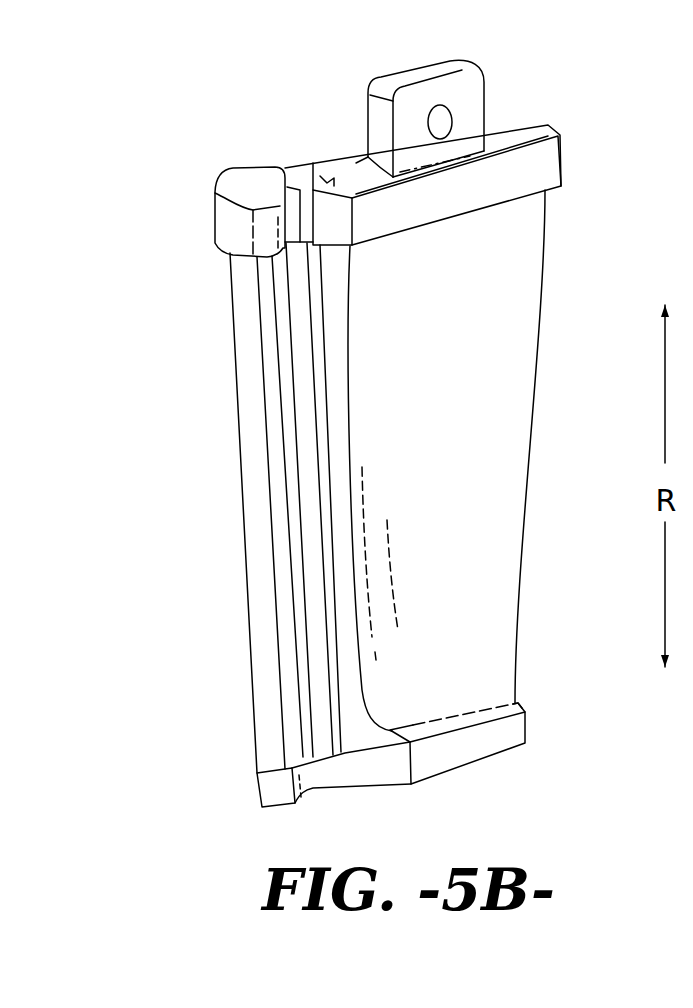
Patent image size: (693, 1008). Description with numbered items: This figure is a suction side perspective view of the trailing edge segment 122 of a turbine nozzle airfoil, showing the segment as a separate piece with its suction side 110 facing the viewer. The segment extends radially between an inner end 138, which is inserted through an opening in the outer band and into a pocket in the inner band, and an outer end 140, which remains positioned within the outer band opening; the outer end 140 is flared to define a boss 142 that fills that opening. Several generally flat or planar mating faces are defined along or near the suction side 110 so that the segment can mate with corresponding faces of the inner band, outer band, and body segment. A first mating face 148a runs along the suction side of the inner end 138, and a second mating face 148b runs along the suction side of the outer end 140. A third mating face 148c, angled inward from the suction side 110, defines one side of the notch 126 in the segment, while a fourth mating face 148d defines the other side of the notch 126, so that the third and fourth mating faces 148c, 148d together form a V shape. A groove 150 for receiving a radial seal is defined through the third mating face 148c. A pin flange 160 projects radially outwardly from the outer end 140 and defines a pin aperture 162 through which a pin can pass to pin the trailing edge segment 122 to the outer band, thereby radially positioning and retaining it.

The suction side 110 is at (485, 485).
The trailing edge segment 122 is at (147, 143).
The notch 126 is at (283, 185).
The inner end 138 is at (241, 787).
The outer end 140 is at (203, 202).
The boss 142 is at (232, 224).
The first mating face 148a is at (488, 741).
The second mating face 148b is at (492, 184).
The third mating face 148c is at (322, 724).
The fourth mating face 148d is at (320, 641).
The groove 150 is at (318, 176).
The pin flange 160 is at (457, 87).
The pin aperture 162 is at (450, 124).